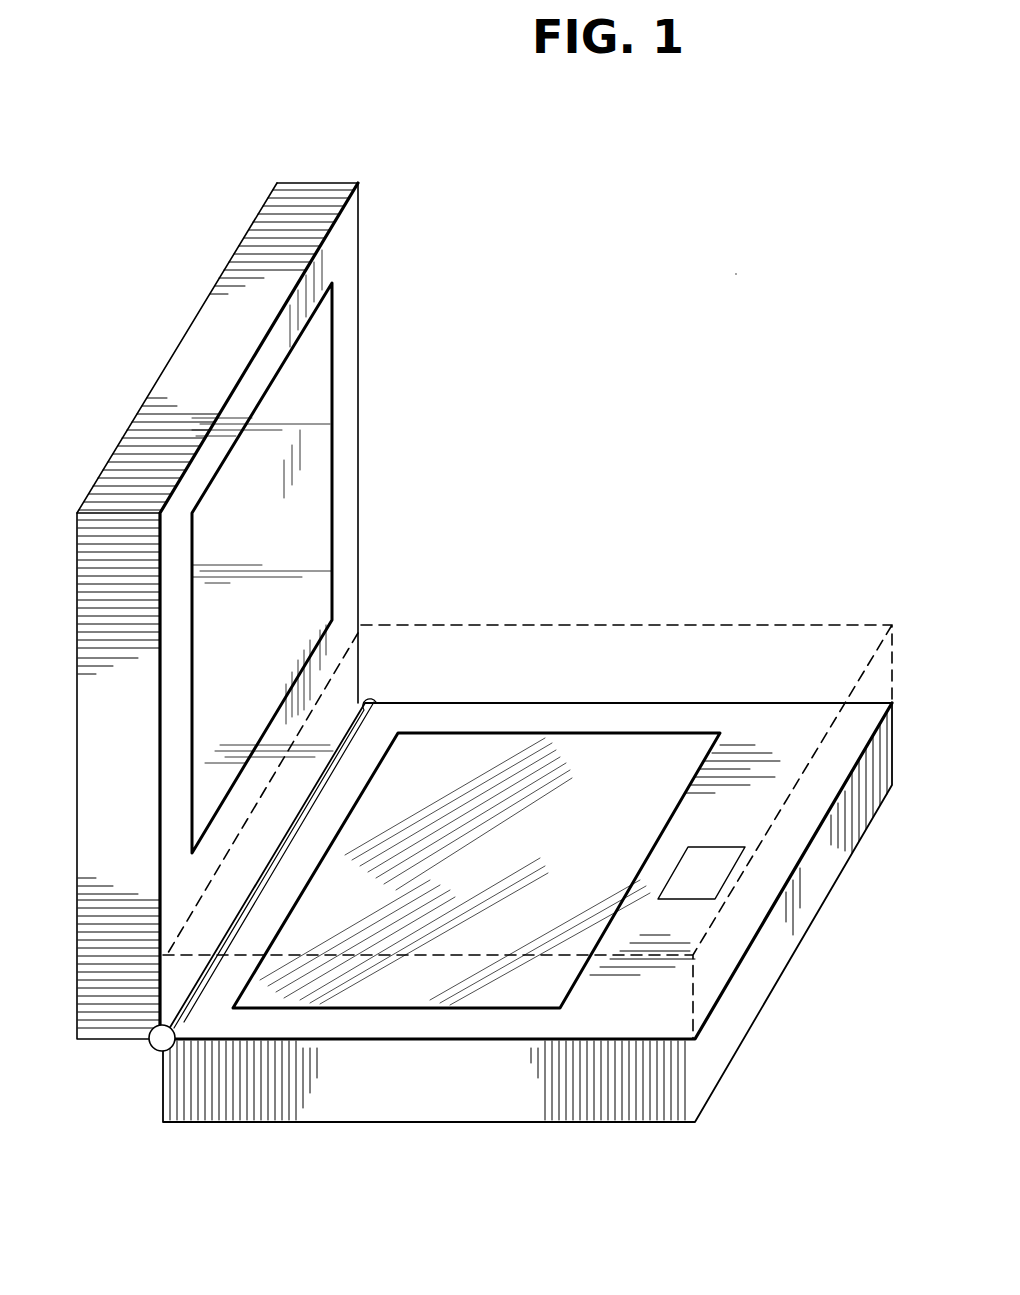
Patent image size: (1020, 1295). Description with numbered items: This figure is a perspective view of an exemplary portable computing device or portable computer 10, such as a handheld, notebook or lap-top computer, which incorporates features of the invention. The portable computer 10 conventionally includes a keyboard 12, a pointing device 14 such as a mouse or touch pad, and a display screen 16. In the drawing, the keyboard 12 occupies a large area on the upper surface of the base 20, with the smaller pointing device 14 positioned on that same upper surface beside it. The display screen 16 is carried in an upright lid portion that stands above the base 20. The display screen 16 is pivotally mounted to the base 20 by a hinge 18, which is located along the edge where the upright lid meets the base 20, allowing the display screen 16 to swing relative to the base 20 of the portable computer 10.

The portable computer 10 is at (736, 274).
The keyboard 12 is at (625, 753).
The pointing device 14 is at (702, 860).
The display screen 16 is at (322, 365).
The hinge 18 is at (158, 1046).
The base 20 is at (788, 928).